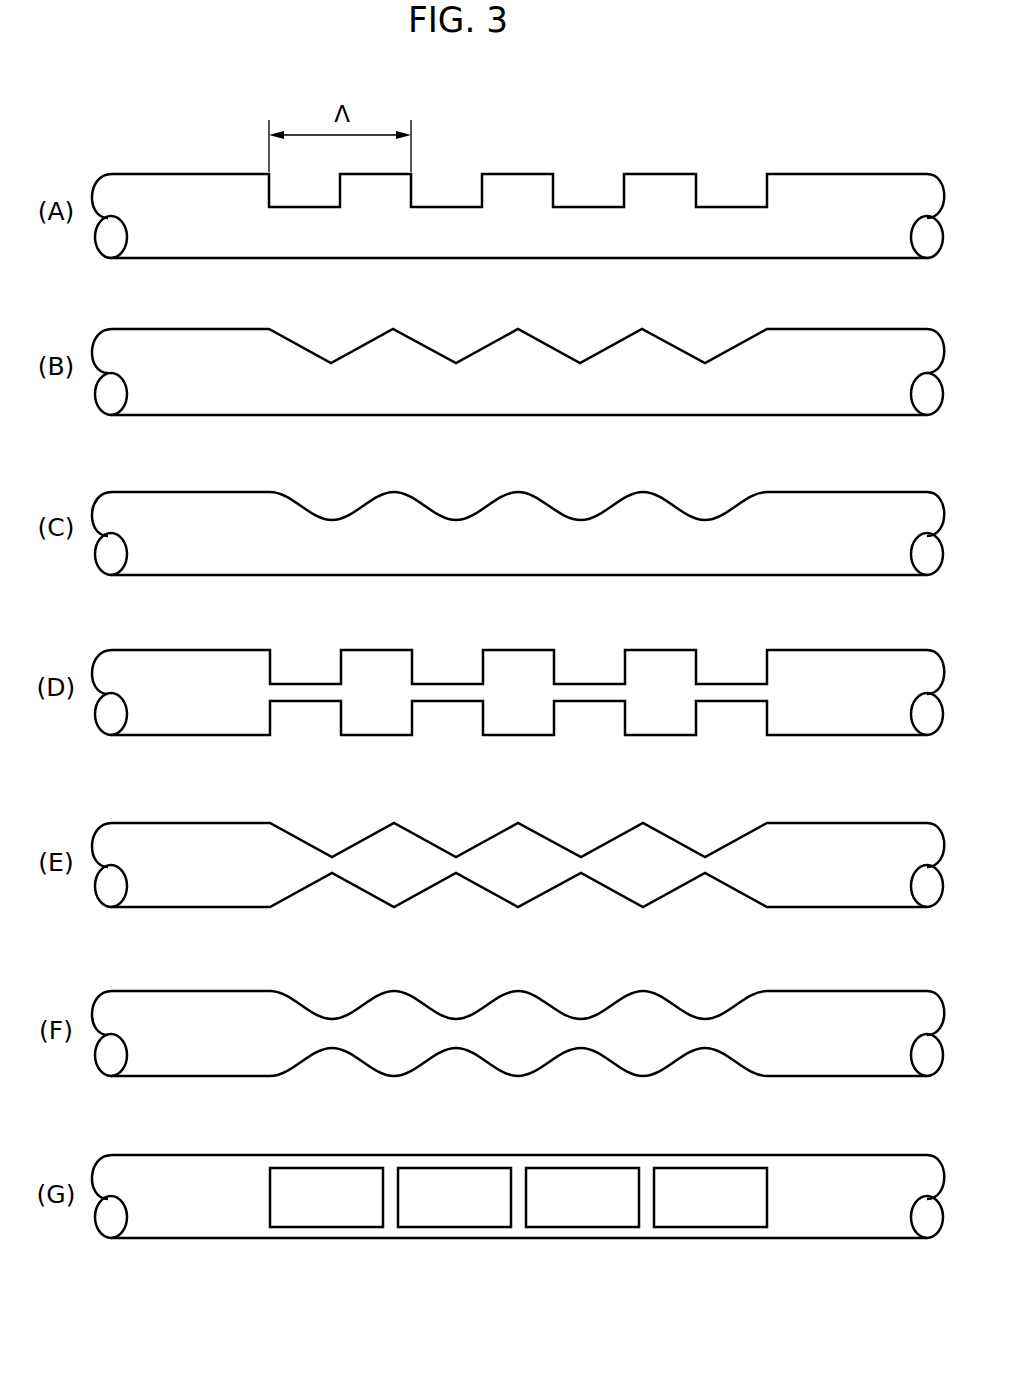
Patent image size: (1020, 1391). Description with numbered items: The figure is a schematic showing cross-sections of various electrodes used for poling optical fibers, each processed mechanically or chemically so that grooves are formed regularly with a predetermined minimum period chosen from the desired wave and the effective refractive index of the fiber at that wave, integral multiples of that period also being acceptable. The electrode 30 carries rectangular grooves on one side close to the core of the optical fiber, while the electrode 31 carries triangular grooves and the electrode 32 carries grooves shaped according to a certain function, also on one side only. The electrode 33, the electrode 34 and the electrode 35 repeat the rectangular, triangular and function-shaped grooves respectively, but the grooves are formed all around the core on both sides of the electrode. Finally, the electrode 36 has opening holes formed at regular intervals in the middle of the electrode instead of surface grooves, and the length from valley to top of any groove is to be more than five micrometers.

The electrode with rectangular grooves on one side 30 is at (835, 179).
The electrode with triangular grooves on one side 31 is at (835, 334).
The electrode with function-shaped grooves on one side 32 is at (835, 497).
The electrode with rectangular grooves all around the core 33 is at (835, 655).
The electrode with triangular grooves all around the core 34 is at (835, 828).
The electrode with function-shaped grooves all around the core 35 is at (835, 996).
The electrode with opening holes 36 is at (835, 1160).